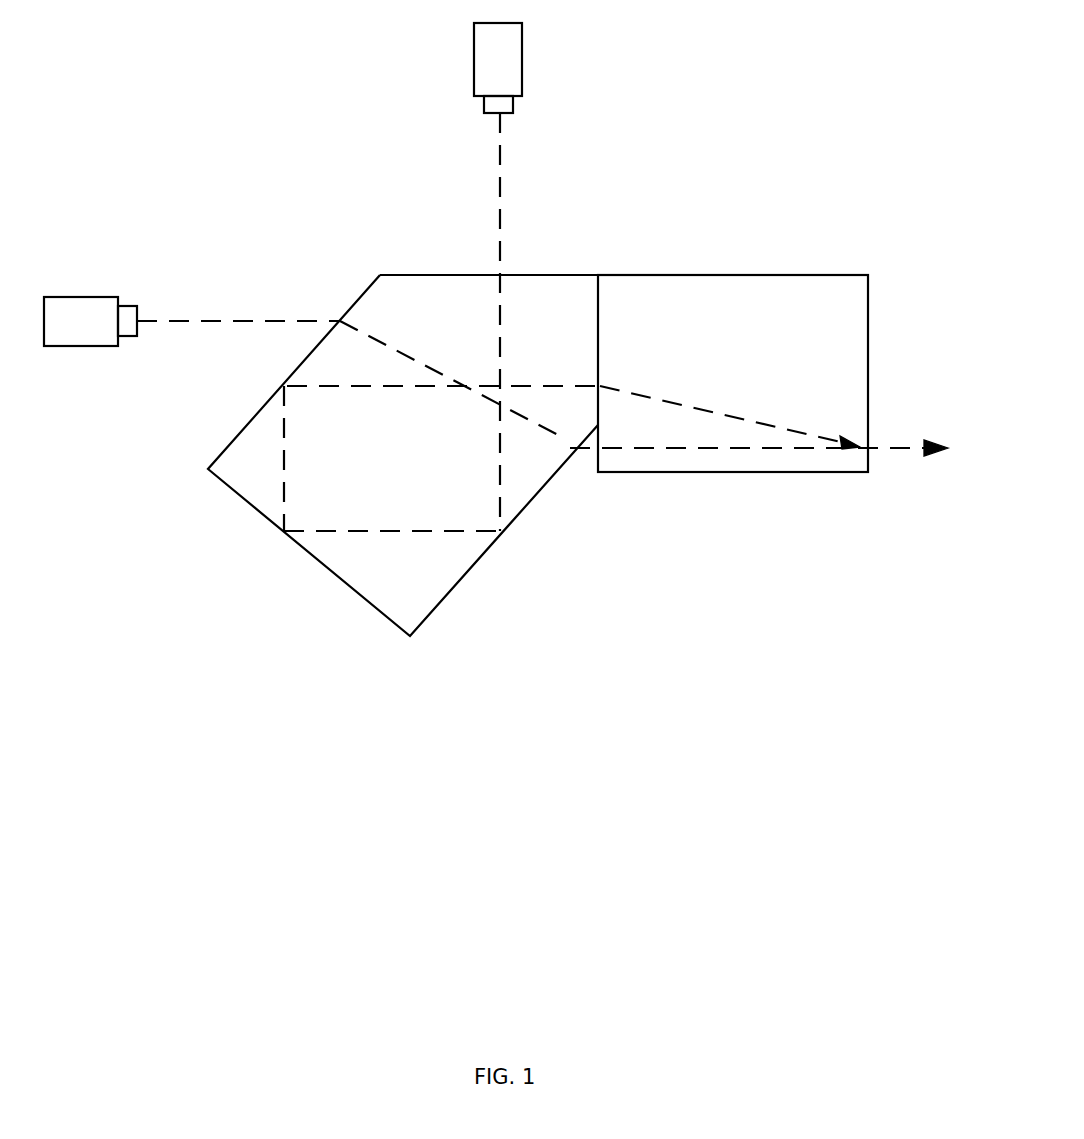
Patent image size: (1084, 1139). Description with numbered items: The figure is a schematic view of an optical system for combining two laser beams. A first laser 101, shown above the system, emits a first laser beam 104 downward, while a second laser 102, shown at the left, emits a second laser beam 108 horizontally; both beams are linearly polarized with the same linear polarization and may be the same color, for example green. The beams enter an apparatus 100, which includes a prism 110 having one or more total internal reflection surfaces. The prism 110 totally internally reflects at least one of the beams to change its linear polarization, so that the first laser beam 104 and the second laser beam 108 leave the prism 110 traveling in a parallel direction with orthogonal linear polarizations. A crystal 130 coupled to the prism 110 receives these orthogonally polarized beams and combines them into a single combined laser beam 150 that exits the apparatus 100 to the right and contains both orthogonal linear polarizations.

The apparatus 100 is at (601, 243).
The first laser 101 is at (523, 62).
The second laser 102 is at (80, 296).
The first laser beam 104 is at (501, 190).
The second laser beam 108 is at (205, 320).
The prism 110 is at (342, 600).
The crystal 130 is at (713, 484).
The combined laser beam 150 is at (893, 448).